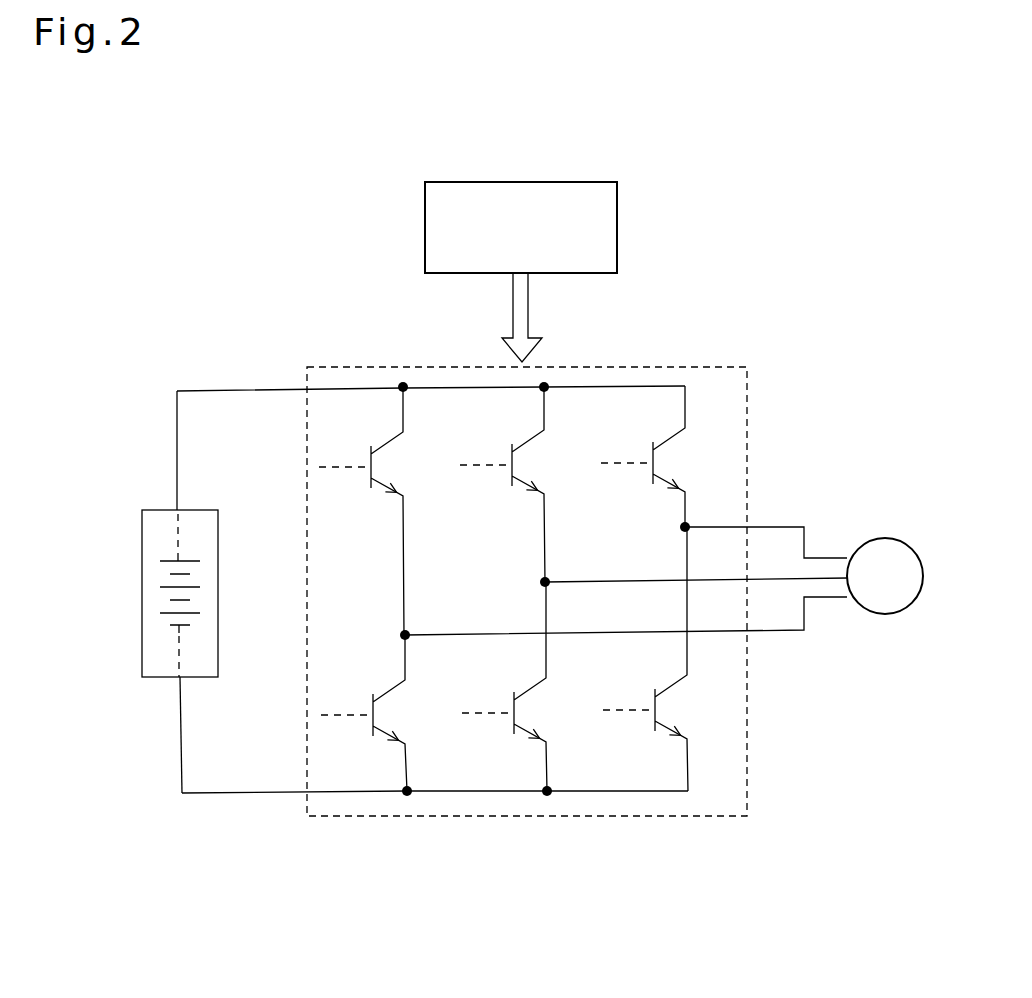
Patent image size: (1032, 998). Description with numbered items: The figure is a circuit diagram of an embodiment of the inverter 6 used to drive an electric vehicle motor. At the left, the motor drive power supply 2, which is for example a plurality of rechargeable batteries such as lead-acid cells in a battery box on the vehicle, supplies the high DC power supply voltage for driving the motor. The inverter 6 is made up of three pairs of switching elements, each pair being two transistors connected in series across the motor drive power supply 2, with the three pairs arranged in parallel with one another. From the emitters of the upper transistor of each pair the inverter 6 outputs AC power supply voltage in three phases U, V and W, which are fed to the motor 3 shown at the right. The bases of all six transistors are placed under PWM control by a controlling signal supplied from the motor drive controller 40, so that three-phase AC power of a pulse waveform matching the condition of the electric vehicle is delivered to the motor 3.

The motor drive controller 40 is at (538, 182).
The inverter 6 is at (594, 815).
The motor 3 is at (885, 614).
The motor drive power supply 2 is at (142, 640).